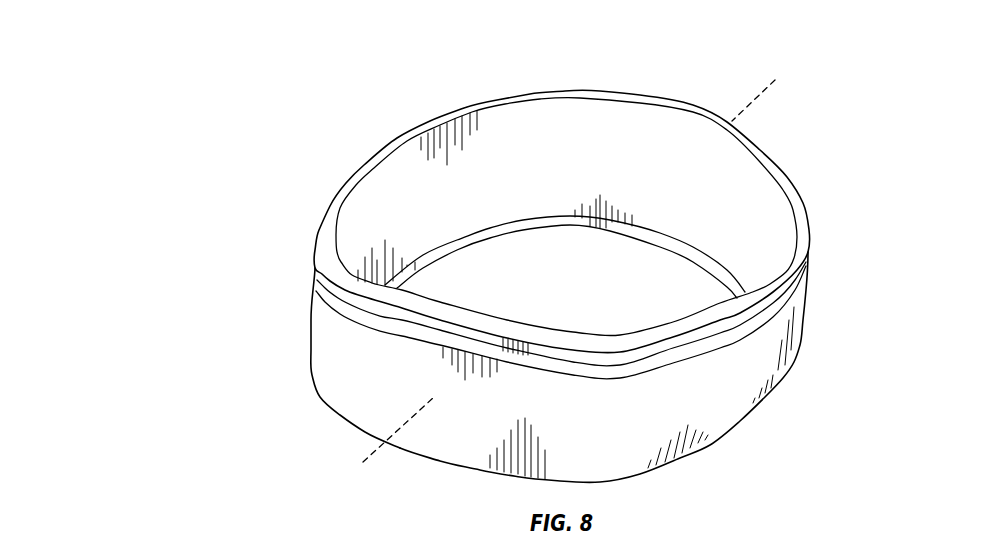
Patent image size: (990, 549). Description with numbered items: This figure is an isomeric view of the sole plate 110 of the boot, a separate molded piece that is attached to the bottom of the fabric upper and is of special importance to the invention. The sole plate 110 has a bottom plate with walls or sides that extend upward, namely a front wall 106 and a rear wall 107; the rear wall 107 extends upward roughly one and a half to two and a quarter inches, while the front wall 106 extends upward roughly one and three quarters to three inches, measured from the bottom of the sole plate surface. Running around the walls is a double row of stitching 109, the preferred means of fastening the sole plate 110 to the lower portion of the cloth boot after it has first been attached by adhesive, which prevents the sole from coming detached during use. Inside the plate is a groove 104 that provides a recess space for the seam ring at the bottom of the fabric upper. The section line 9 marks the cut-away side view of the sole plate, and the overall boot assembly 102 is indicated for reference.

The bracelet band 102 is at (252, 90).
The groove 104 is at (668, 238).
The front wall 106 is at (798, 130).
The rear wall 107 is at (282, 363).
The double row of stitching 109 is at (720, 325).
The sole plate 110 is at (472, 450).
The section line for FIG. 9 is at (775, 80).